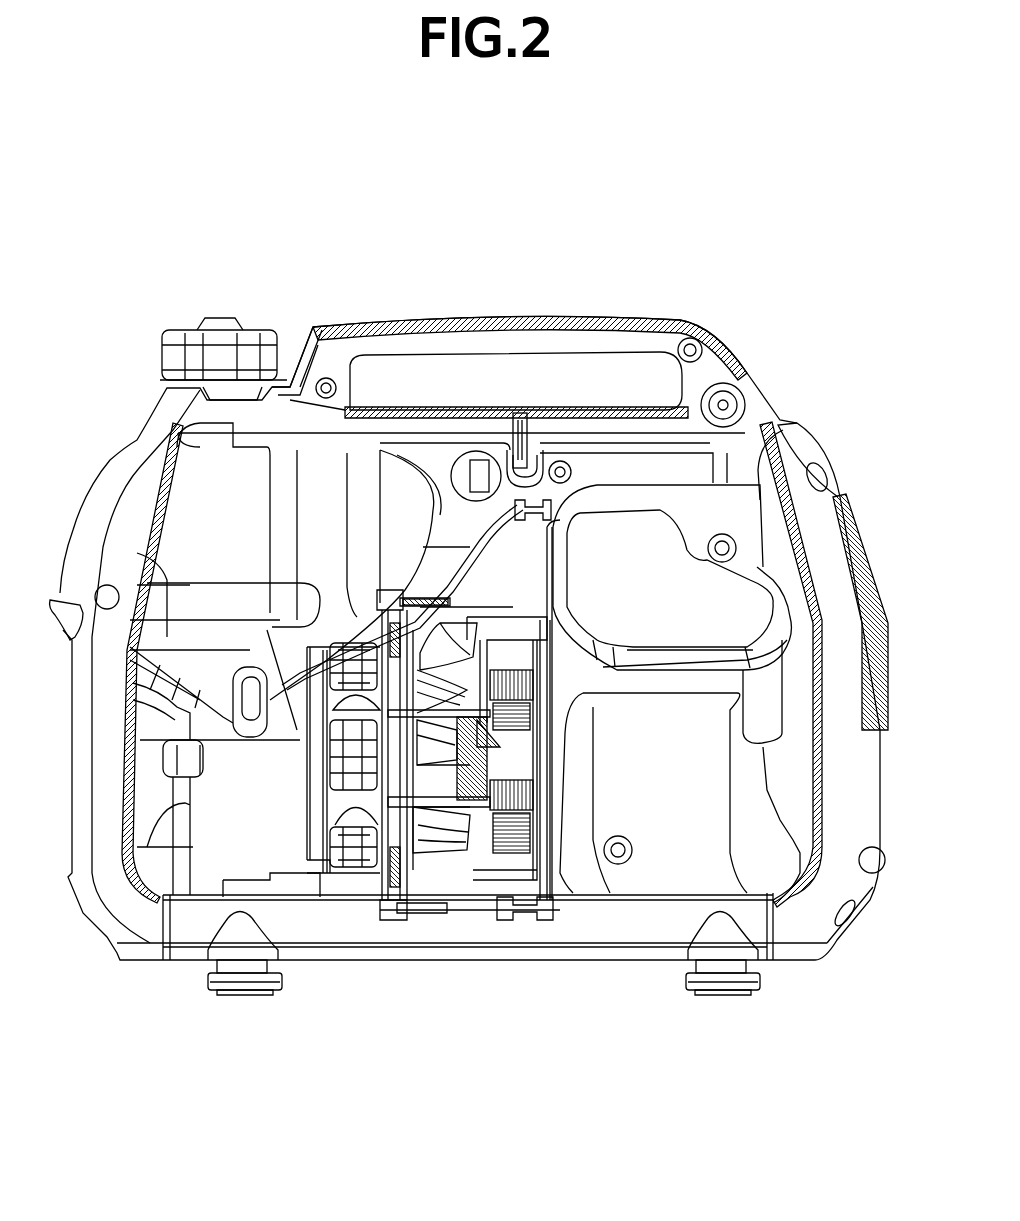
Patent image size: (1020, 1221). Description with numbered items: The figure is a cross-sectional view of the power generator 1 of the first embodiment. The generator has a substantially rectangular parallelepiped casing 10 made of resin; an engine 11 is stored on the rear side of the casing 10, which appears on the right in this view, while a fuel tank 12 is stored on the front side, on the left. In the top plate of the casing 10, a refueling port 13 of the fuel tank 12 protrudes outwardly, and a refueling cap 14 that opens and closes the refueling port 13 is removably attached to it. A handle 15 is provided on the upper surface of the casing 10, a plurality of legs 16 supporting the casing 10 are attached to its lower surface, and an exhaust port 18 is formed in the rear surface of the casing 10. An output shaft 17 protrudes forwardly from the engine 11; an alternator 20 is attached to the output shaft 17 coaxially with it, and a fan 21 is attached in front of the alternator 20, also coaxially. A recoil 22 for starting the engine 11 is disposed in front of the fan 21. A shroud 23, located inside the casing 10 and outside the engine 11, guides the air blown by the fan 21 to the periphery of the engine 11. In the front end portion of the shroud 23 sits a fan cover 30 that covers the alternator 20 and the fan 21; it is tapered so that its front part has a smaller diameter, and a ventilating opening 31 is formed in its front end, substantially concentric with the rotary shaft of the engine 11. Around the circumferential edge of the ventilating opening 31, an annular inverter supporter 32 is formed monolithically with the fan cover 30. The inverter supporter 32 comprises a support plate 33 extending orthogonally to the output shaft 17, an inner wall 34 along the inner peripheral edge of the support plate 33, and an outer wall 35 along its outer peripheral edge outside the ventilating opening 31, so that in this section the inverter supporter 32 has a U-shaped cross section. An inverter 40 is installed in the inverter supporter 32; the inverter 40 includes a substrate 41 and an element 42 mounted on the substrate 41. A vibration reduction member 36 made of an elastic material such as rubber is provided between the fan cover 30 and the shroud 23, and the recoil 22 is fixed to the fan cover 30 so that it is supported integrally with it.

The power generator 1 is at (564, 214).
The casing 10 is at (775, 410).
The engine 11 is at (660, 880).
The fuel tank 12 is at (183, 503).
The refueling port 13 is at (298, 330).
The refueling cap 14 is at (222, 330).
The handle 15 is at (570, 330).
The legs 16 is at (232, 995).
The output shaft 17 is at (510, 880).
The exhaust port 18 is at (852, 530).
The alternator 20 is at (500, 640).
The fan 21 is at (445, 860).
The recoil 22 is at (333, 767).
The shroud 23 is at (610, 905).
The fan cover 30 is at (468, 630).
The ventilating opening 31 is at (352, 890).
The inverter supporter 32 is at (432, 600).
The support plate 33 is at (435, 870).
The inner wall 34 is at (352, 640).
The outer wall 35 is at (390, 620).
The vibration reduction member 36 is at (540, 500).
The inverter 40 is at (350, 860).
The substrate 41 is at (405, 900).
The element 42 is at (387, 880).